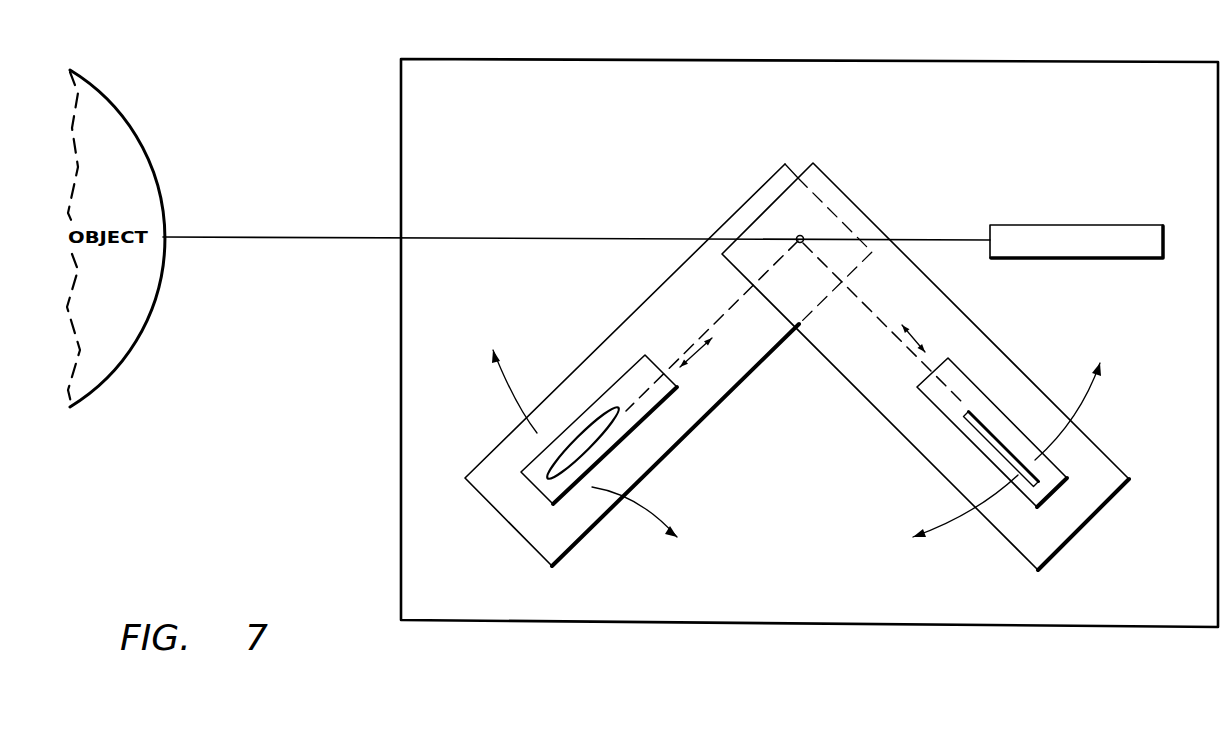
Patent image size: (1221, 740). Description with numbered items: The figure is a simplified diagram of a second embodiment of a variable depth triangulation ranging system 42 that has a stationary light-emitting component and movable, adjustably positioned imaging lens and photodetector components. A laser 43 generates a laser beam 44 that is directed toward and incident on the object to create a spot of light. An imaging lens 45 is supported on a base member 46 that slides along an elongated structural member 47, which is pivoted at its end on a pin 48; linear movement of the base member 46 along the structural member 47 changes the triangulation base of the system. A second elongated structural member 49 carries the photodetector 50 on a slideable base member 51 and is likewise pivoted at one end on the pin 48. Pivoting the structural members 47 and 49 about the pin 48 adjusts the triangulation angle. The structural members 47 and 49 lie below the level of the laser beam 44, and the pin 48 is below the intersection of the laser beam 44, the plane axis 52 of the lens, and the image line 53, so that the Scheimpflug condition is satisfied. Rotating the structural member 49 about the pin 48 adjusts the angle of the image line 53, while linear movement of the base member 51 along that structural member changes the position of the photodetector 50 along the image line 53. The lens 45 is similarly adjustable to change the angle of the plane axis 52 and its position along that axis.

The system 42 is at (966, 50).
The laser 43 is at (1065, 225).
The laser beam 44 is at (568, 236).
The imaging lens 45 is at (547, 477).
The base member 46 is at (656, 365).
The elongated structural member 47 is at (623, 438).
The pin 48 is at (800, 239).
The second elongated structural member 49 is at (959, 388).
The photodetector 50 is at (1028, 480).
The base member 51 is at (1062, 462).
The plane axis 52 is at (730, 307).
The image line 53 is at (870, 310).